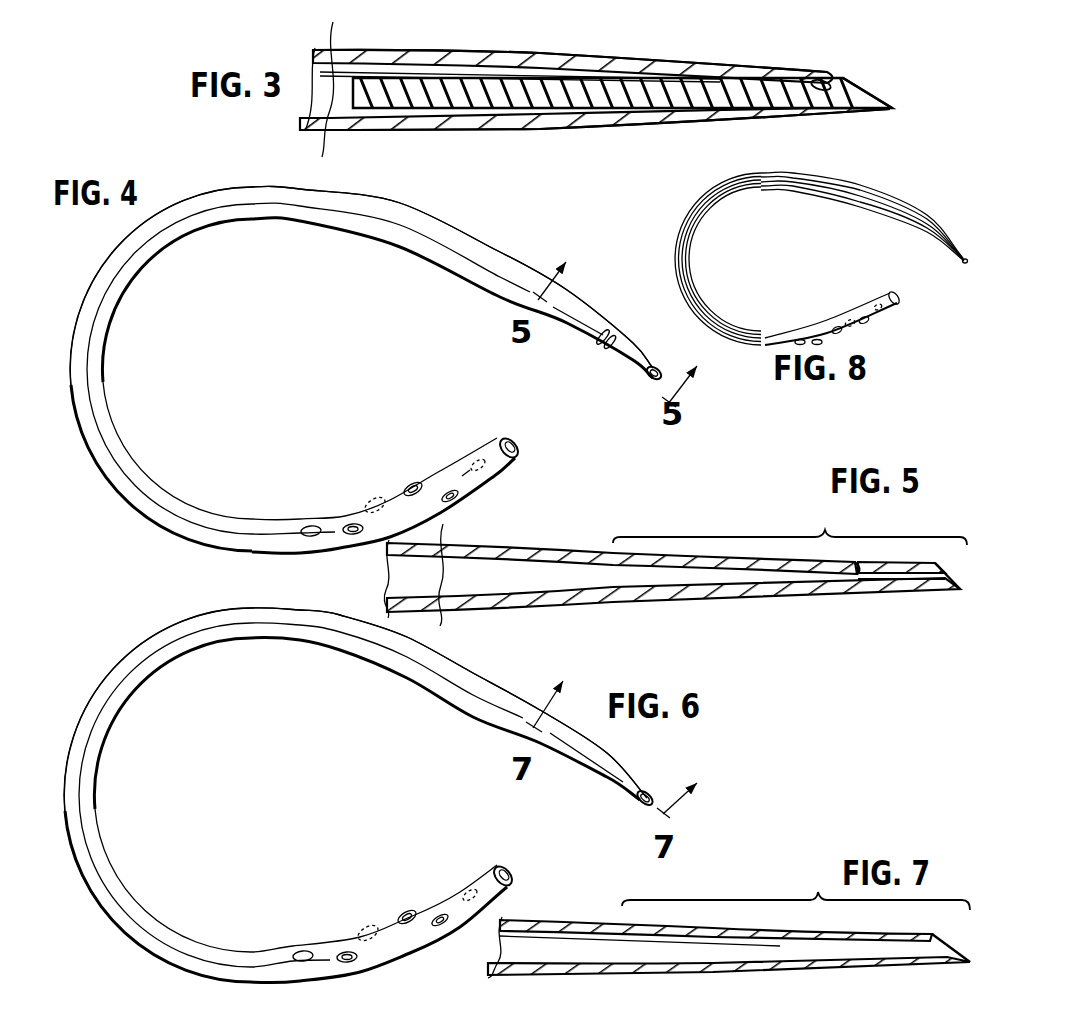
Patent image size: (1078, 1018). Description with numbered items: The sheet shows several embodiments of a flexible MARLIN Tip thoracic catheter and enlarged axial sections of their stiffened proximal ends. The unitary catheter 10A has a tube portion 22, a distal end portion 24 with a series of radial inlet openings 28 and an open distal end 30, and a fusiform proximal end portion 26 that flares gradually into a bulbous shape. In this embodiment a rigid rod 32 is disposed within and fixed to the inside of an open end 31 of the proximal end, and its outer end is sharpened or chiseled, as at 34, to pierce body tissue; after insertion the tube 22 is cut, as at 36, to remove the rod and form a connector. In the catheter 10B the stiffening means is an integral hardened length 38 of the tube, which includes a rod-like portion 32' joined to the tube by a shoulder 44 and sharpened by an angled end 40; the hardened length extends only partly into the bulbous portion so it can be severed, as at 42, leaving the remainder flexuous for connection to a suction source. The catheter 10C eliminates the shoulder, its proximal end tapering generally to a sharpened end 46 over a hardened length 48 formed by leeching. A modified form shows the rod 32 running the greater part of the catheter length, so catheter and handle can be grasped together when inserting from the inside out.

In FIG. 3, the unitary MARLIN Tip catheter 10A is at (393, 37).
In FIG. 4, the catheter 10B is at (186, 190).
In FIG. 6, the catheter 10C is at (137, 632).
In FIG. 4, the tube portion 22 is at (93, 375).
In FIG. 6, the tube portion 22 is at (97, 858).
In FIG. 4, the distal end portion 24 is at (450, 470).
In FIG. 6, the distal end portion 24 is at (447, 893).
In FIG. 3, the fusiform proximal end portion 26 is at (433, 52).
In FIG. 4, the fusiform proximal end portion 26 is at (465, 247).
In FIG. 8, the fusiform proximal end portion 26 is at (910, 237).
In FIG. 4, the radial inlet openings 28 is at (410, 487).
In FIG. 6, the radial inlet openings 28 is at (403, 912).
In FIG. 4, the open distal end 30 is at (518, 447).
In FIG. 6, the open distal end 30 is at (507, 873).
In FIG. 3, the open end 31 is at (820, 85).
In FIG. 3, the rigid rod 32 is at (622, 67).
In FIG. 8, the rigid rod 32 is at (819, 255).
In FIG. 4, the rod-like portion 32' is at (585, 349).
In FIG. 5, the rod-like portion 32' is at (901, 608).
In FIG. 3, the sharpened or chiseled end 34 is at (872, 99).
In FIG. 8, the sharpened or chiseled end 34 is at (963, 266).
In FIG. 3, the severing location 36 is at (326, 142).
In FIG. 5, the hardened length 38 is at (790, 525).
In FIG. 4, the angled end 40 is at (650, 385).
In FIG. 5, the angled end 40 is at (947, 572).
In FIG. 5, the severing location 42 is at (440, 538).
In FIG. 4, the shoulder 44 is at (612, 337).
In FIG. 5, the shoulder 44 is at (860, 566).
In FIG. 6, the sharpened end 46 is at (656, 790).
In FIG. 7, the sharpened end 46 is at (933, 936).
In FIG. 6, the hardened length 48 is at (612, 763).
In FIG. 7, the hardened length 48 is at (729, 918).